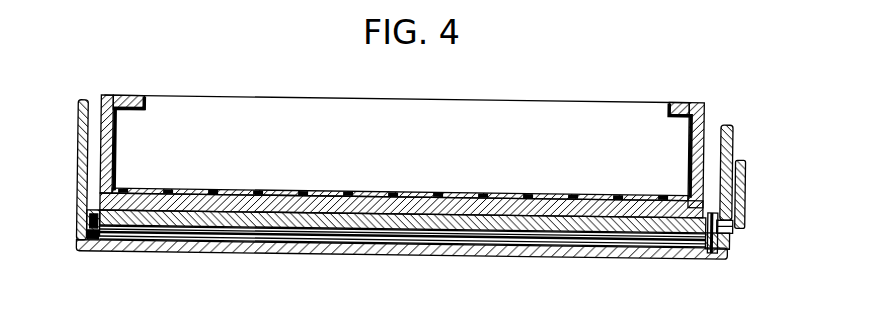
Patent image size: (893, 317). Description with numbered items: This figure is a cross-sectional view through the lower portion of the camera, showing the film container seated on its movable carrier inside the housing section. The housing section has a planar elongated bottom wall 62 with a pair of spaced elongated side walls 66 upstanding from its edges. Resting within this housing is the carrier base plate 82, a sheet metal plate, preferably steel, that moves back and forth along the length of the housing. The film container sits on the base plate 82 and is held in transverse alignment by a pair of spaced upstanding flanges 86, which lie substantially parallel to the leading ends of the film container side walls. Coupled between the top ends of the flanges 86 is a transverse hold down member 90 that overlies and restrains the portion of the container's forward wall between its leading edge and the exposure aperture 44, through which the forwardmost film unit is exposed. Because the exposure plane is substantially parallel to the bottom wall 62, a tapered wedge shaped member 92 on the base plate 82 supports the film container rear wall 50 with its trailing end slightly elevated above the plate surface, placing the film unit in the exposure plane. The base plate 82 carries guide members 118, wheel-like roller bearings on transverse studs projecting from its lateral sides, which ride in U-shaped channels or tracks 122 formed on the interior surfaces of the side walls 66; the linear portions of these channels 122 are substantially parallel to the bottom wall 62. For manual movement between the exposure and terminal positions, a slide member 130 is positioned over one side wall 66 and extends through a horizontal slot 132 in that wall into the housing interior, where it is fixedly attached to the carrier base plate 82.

The exposure aperture 44 is at (586, 133).
The film container rear wall 50 is at (300, 191).
The bottom wall 62 is at (370, 256).
The side walls 66 is at (77, 165).
The carrier base plate 82 is at (214, 233).
The upstanding flanges 86 is at (101, 137).
The transverse hold down member 90 is at (683, 105).
The tapered wedge shaped member 92 is at (432, 200).
The leading end guide members 118 is at (93, 241).
The channels or tracks 122 is at (88, 220).
The slide member 130 is at (748, 173).
The horizontal slot 132 is at (733, 236).